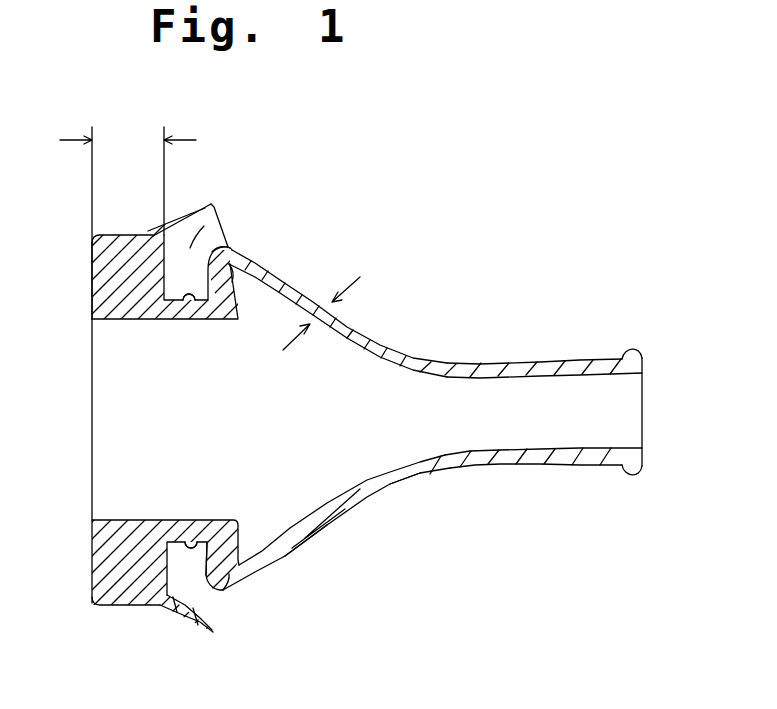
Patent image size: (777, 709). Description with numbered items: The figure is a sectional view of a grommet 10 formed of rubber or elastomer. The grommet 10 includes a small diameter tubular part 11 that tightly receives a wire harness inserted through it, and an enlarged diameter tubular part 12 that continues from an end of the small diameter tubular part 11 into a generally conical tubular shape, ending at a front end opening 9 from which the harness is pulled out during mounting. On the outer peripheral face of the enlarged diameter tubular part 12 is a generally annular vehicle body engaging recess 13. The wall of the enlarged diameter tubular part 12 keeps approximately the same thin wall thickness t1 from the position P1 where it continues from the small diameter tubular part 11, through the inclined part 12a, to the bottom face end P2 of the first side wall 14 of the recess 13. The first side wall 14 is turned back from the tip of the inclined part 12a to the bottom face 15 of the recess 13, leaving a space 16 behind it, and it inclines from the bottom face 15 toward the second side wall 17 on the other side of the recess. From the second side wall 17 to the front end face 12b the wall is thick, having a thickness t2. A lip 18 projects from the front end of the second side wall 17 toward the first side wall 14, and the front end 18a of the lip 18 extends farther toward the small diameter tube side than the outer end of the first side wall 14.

The front end opening 9 is at (628, 403).
The grommet 10 is at (394, 289).
The small diameter tubular part 11 is at (526, 362).
The enlarged diameter tubular part 12 is at (387, 347).
The inclined part 12a is at (327, 525).
The front end face 12b is at (92, 278).
The vehicle body engaging recess 13 is at (190, 248).
The first side wall 14 is at (232, 248).
The bottom face 15 is at (187, 320).
The space 16 is at (235, 265).
The second side wall 17 is at (145, 319).
The lip 18 is at (183, 217).
The front end of lip 18a is at (217, 203).
The thin wall thickness t1 is at (303, 343).
The thick wall t2 is at (128, 129).
The position of continuation P1 is at (430, 473).
The bottom face end P2 is at (213, 543).